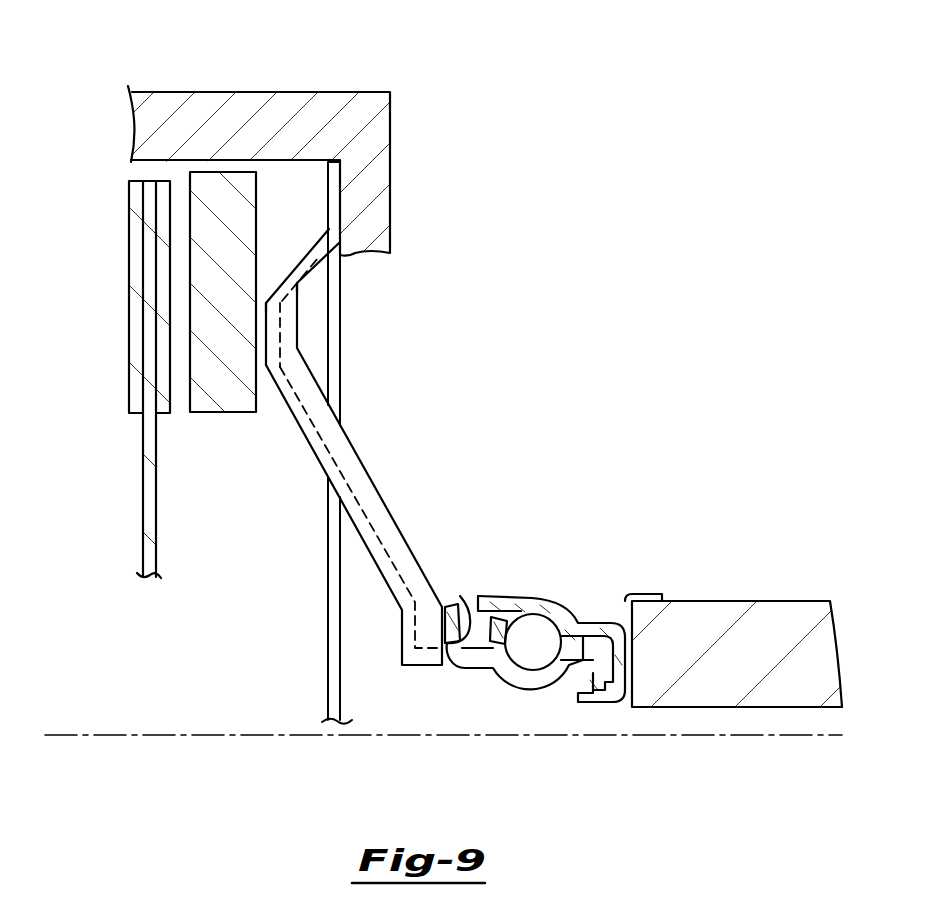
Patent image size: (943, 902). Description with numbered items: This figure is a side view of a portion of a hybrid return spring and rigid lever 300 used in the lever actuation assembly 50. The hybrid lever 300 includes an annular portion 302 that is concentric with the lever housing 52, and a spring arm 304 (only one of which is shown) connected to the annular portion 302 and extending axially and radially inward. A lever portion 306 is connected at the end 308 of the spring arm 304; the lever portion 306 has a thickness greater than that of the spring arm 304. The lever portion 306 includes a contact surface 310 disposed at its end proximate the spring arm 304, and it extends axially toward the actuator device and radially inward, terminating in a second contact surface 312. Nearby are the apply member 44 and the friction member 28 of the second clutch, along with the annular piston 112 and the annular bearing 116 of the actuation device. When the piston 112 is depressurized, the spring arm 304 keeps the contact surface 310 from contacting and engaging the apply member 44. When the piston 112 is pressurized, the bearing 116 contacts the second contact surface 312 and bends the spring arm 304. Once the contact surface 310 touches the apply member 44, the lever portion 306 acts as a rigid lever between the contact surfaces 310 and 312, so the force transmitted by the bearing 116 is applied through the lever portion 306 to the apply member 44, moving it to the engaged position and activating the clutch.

The lever housing 52 is at (255, 92).
The annular portion 302 is at (340, 365).
The apply member 44 is at (223, 413).
The friction member 28 is at (143, 528).
The hybrid return spring and rigid lever 300 is at (359, 437).
The contact surface 310 is at (264, 340).
The spring arm 304 is at (294, 272).
The end of spring arm 308 is at (277, 303).
The lever portion 306 is at (370, 488).
The lever actuation assembly 50 is at (684, 596).
The second contact surface 312 is at (460, 597).
The annular bearing assembly 116 is at (527, 598).
The annular piston 112 is at (735, 547).